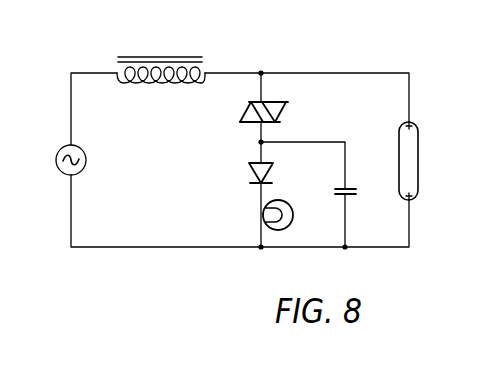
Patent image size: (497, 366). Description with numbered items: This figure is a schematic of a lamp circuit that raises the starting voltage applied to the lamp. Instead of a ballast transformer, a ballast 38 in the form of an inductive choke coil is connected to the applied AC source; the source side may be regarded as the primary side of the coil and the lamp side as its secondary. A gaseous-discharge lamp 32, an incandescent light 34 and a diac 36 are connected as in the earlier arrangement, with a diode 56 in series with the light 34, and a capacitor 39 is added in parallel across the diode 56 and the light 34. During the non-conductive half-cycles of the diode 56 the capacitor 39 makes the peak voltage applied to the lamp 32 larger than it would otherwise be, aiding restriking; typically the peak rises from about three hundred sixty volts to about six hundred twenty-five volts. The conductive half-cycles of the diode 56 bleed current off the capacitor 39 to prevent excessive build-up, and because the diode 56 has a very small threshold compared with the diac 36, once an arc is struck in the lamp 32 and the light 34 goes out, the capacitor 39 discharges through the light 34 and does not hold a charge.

The gaseous-discharge lamp 32 is at (402, 143).
The incandescent light 34 is at (293, 215).
The diac 36 is at (288, 102).
The ballast 38 is at (190, 56).
The capacitor 39 is at (352, 196).
The diode 56 is at (250, 168).